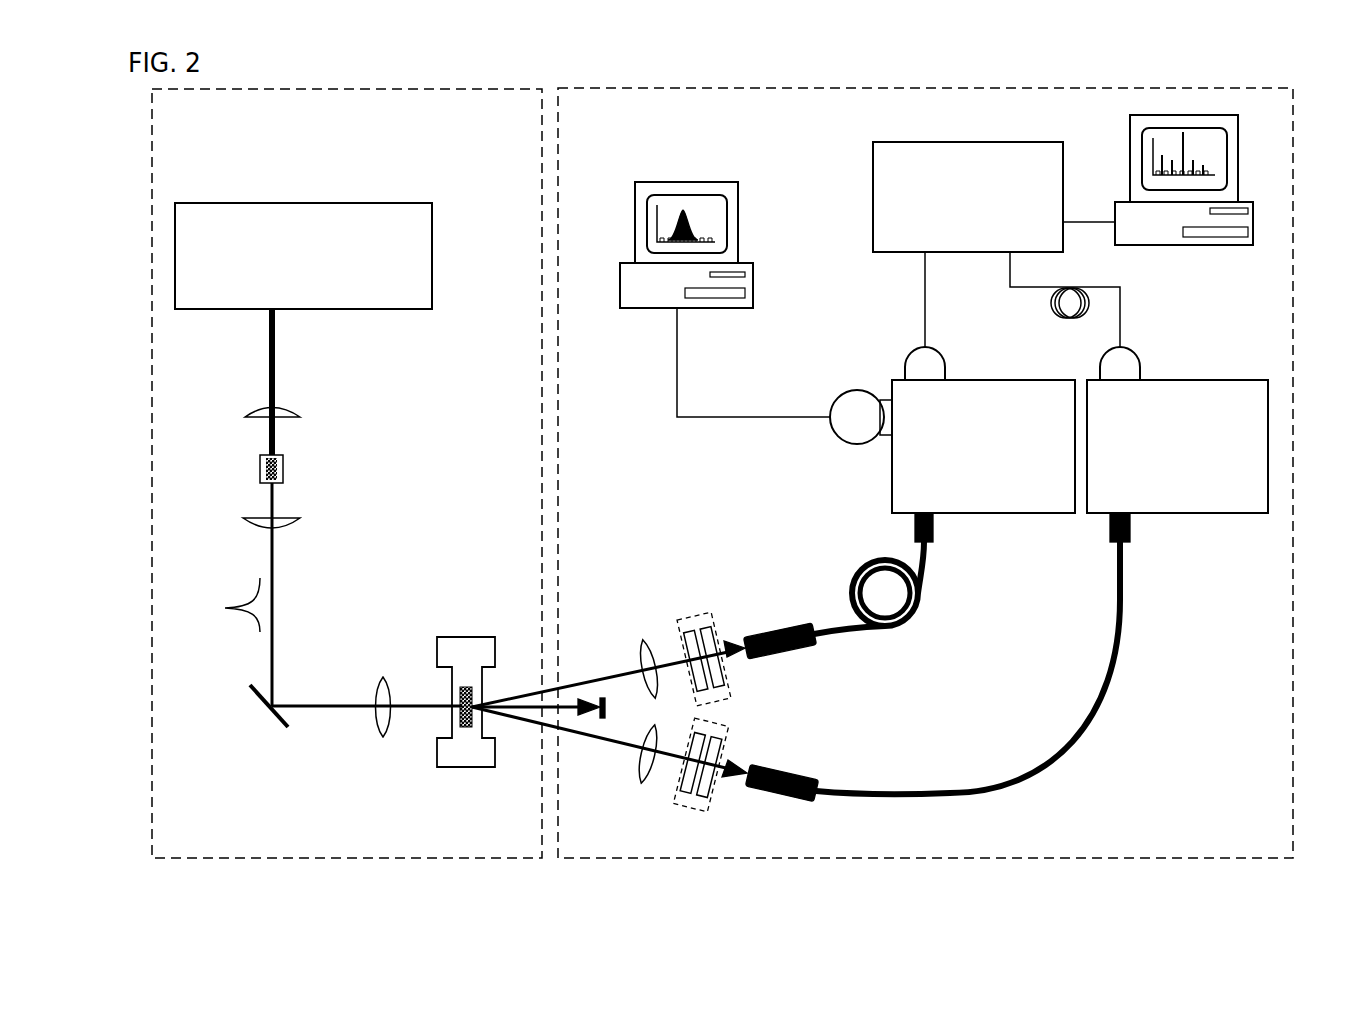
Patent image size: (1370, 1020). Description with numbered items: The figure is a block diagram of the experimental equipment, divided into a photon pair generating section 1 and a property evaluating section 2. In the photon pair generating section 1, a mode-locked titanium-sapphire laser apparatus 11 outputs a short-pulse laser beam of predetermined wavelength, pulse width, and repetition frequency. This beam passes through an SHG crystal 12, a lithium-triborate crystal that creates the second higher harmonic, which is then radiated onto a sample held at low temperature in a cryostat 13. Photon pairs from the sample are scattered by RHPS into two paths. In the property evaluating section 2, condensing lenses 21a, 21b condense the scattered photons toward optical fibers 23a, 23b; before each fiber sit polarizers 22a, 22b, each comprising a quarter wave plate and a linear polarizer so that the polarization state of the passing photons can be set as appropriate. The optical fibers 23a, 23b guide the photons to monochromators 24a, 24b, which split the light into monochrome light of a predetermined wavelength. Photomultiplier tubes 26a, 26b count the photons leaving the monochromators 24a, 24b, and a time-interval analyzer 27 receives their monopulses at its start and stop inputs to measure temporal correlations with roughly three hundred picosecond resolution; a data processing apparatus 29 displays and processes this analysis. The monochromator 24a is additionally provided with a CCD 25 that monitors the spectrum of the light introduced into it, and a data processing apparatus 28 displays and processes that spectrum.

The photon pair generating section 1 is at (406, 89).
The property evaluating section 2 is at (903, 88).
The mode-locked titanium-sapphire laser apparatus 11 is at (302, 203).
The SHG crystal 12 is at (284, 466).
The cryostat 13 is at (465, 767).
The condensing lens 21a is at (640, 650).
The condensing lens 21b is at (638, 768).
The polarizer 22a is at (728, 688).
The polarizer 22b is at (728, 735).
The optical fiber 23a is at (925, 604).
The optical fiber 23b is at (1098, 690).
The monochromator 24a is at (1040, 513).
The monochromator 24b is at (1235, 513).
The CCD 25 is at (850, 392).
The photomultiplier tube 26a is at (945, 365).
The photomultiplier tube 26b is at (1140, 365).
The time-interval analyzer 27 is at (872, 204).
The data processing apparatus 28 is at (687, 182).
The data processing apparatus 29 is at (1212, 245).